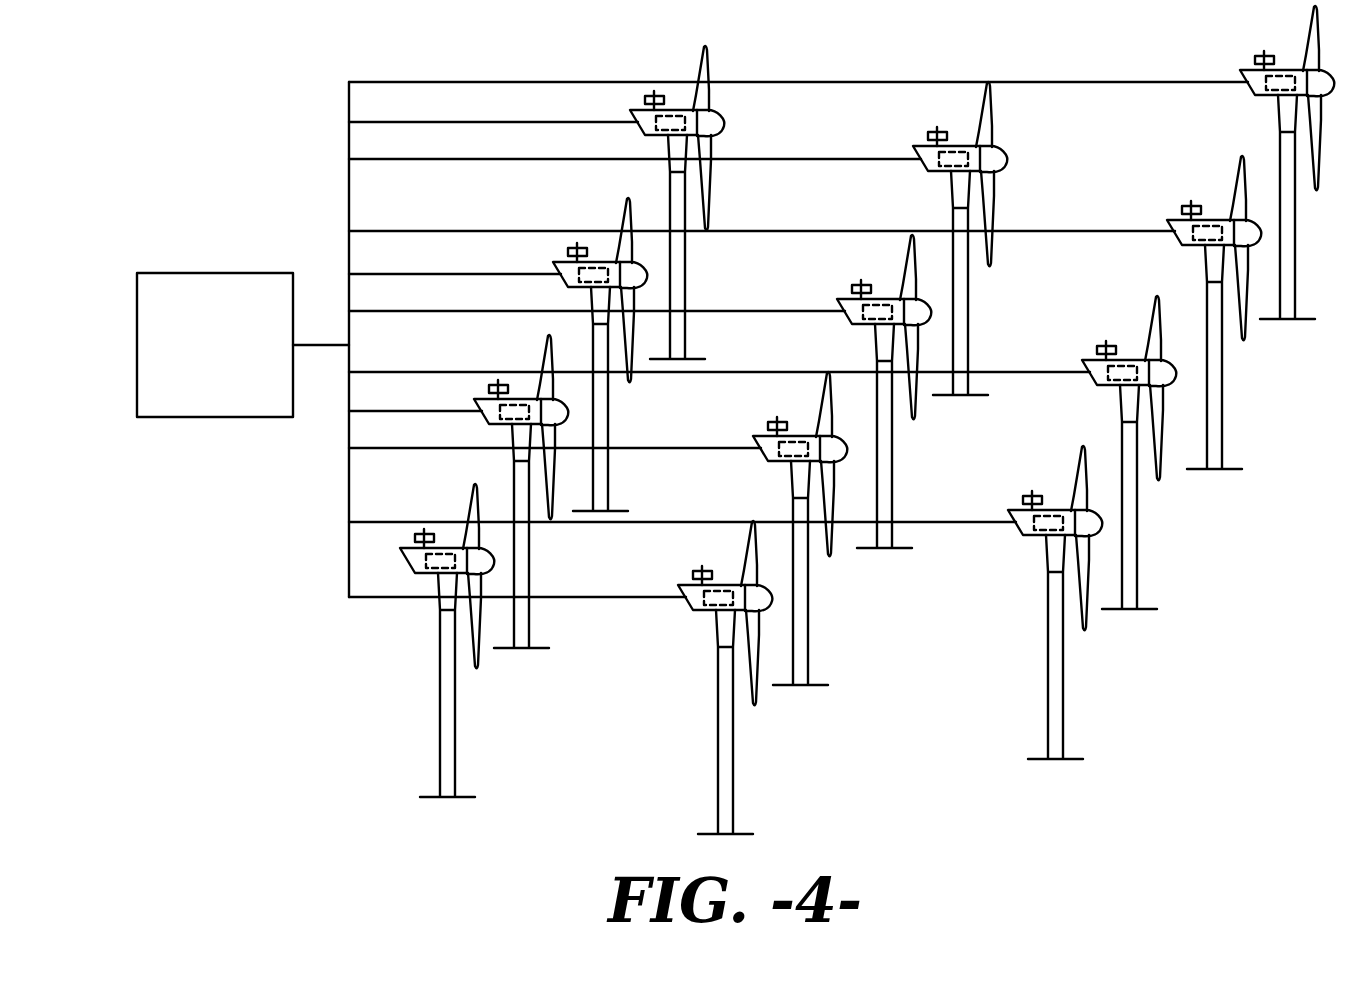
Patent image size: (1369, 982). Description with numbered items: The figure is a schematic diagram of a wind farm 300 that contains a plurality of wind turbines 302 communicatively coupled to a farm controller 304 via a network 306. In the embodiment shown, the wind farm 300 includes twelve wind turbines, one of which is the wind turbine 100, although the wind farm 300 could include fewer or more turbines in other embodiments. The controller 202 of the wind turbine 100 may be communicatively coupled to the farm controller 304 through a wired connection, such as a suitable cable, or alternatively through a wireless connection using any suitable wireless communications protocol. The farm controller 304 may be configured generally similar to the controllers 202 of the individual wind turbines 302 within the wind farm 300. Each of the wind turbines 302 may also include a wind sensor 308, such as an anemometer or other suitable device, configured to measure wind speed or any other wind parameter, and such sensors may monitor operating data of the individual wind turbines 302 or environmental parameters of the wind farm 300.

The wind turbine 100 is at (456, 722).
The controller 202 is at (398, 556).
The wind farm 300 is at (250, 158).
The wind turbines 302 is at (529, 580).
The farm controller 304 is at (240, 358).
The network 306 is at (507, 159).
The wind sensor 308 is at (646, 98).